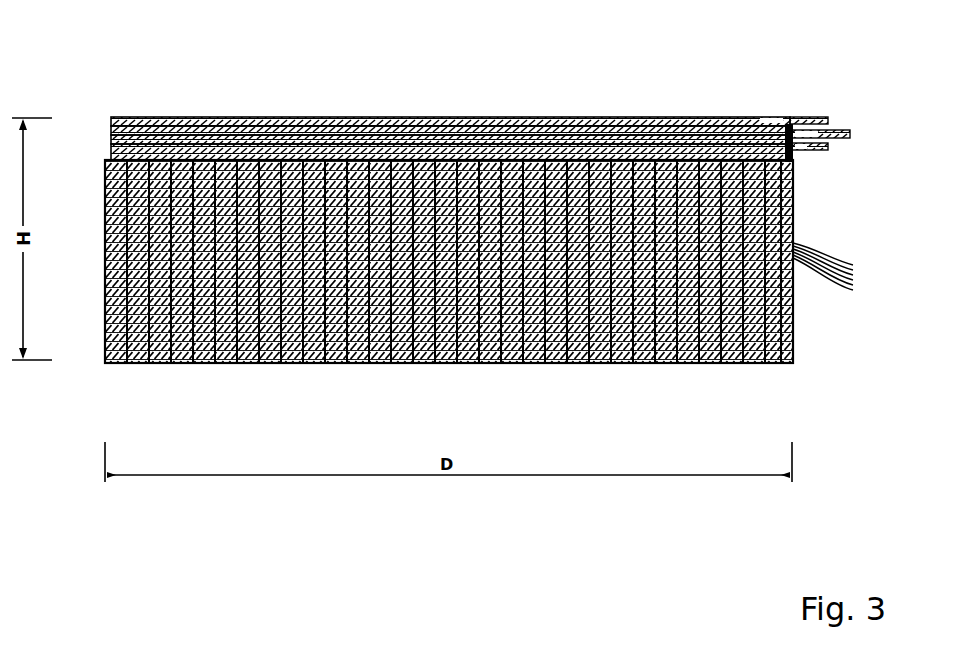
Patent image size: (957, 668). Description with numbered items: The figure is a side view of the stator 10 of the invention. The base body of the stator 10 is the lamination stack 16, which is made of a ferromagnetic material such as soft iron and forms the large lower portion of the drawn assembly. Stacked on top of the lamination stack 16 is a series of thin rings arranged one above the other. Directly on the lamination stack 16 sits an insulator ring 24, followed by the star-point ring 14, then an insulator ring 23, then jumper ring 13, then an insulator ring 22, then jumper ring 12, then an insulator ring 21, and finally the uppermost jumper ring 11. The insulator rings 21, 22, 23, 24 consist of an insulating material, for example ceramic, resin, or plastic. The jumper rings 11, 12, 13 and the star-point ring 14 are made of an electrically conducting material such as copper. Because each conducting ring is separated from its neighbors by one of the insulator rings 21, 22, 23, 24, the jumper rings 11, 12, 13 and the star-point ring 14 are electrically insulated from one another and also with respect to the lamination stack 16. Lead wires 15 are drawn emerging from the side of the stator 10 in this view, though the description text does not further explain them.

The stator 10 is at (401, 96).
The jumper ring 11 is at (828, 119).
The jumper ring 12 is at (850, 134).
The jumper ring 13 is at (828, 146).
The star-point ring 14 is at (790, 155).
The lead wires 15 is at (841, 268).
The lamination stack 16 is at (100, 162).
The insulator ring 21 is at (110, 121).
The insulator ring 22 is at (110, 133).
The insulator ring 23 is at (110, 144).
The insulator ring 24 is at (110, 155).